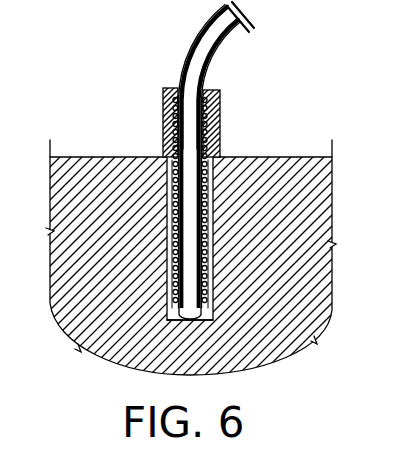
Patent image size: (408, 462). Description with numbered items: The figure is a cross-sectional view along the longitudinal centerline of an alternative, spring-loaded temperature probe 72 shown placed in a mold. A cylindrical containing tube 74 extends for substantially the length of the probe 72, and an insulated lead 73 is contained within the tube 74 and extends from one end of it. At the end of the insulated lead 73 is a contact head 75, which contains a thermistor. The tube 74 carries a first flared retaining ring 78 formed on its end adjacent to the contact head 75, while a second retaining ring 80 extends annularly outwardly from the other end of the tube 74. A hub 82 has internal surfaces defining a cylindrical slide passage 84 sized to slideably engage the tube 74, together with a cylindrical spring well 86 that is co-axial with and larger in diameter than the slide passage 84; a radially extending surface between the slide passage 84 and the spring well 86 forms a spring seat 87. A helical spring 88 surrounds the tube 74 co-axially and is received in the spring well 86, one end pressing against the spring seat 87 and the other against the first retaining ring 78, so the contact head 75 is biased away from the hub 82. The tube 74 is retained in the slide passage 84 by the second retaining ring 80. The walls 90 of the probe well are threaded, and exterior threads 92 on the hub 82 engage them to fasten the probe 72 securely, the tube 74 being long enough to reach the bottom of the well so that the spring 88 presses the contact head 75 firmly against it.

The spring-loaded temperature probe 72 is at (192, 40).
The insulated lead 73 is at (216, 51).
The cylindrical tube 74 is at (210, 220).
The contact head 75 is at (197, 320).
The first flared retaining ring 78 is at (213, 312).
The second retaining ring 80 is at (205, 91).
The hub 82 is at (172, 125).
The cylindrical slide passage 84 is at (164, 101).
The cylindrical spring well 86 is at (220, 143).
The spring seat 87 is at (166, 133).
The helical spring 88 is at (203, 272).
The threaded walls of the probe well 90 is at (253, 158).
The exterior threads 92 is at (168, 183).